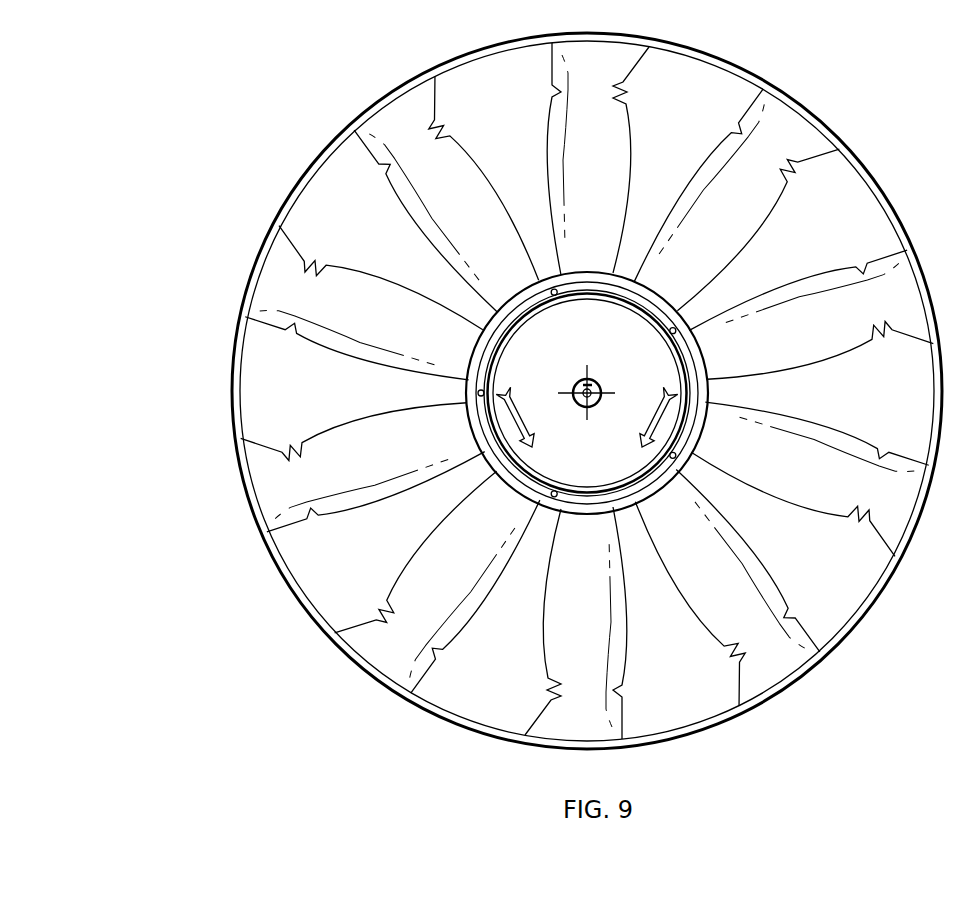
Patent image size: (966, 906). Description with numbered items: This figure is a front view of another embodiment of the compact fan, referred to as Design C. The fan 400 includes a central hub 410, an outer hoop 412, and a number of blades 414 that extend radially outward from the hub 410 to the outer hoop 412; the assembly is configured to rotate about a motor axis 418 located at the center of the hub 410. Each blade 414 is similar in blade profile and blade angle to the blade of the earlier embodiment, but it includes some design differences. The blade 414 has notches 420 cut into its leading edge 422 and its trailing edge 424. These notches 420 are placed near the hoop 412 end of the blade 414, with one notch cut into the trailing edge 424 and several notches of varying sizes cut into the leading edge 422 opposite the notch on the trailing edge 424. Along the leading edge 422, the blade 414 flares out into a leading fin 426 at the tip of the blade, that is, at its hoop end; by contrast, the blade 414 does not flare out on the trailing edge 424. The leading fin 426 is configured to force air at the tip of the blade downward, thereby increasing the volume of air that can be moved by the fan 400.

The fan 400 is at (252, 164).
The hub 410 is at (624, 337).
The outer hoop 412 is at (682, 49).
The blade 414 is at (345, 455).
The motor axis 418 is at (590, 398).
The notches 420 is at (791, 637).
The leading edge 422 is at (412, 578).
The trailing edge 424 is at (447, 645).
The leading fin 426 is at (890, 540).